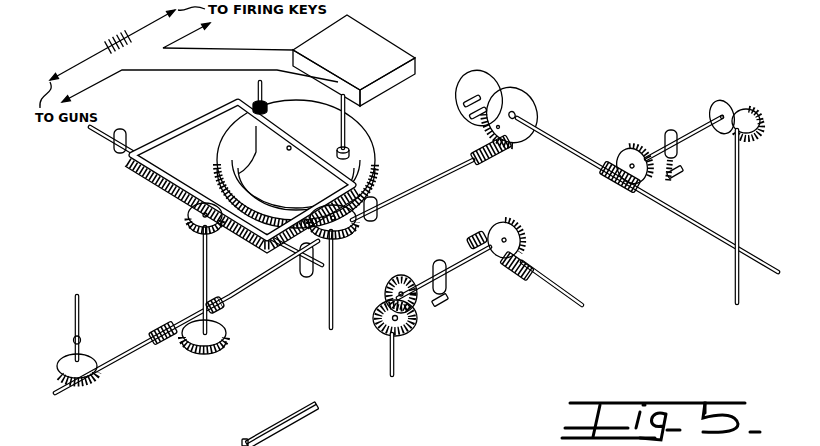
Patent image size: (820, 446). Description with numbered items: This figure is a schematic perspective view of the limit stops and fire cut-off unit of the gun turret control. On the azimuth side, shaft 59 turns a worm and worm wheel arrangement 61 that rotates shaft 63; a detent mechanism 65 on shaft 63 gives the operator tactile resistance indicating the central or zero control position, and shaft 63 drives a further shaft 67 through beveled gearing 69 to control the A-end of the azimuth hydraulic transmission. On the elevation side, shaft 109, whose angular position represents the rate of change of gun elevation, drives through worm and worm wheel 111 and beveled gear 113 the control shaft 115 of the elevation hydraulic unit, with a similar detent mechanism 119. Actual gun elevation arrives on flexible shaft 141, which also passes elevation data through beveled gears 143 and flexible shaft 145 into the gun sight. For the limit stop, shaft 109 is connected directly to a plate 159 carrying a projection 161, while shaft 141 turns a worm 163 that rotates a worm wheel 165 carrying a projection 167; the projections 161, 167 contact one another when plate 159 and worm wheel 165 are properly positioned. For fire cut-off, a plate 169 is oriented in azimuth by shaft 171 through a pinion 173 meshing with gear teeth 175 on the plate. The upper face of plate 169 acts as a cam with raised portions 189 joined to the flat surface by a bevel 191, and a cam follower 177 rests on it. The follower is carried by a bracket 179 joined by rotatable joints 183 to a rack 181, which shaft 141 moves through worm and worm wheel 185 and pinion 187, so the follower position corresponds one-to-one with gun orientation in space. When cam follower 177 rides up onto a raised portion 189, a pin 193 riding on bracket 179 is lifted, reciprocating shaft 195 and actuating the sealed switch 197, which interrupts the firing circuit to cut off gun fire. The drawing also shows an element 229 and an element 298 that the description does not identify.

The shaft 59 is at (560, 287).
The worm and worm wheel arrangement 61 is at (522, 256).
The shaft 63 is at (424, 276).
The detent mechanism 65 is at (449, 290).
The shaft 67 is at (395, 347).
The beveled gearing 69 is at (388, 303).
The shaft 109 is at (748, 256).
The worm and worm wheel 111 is at (648, 196).
The beveled gear 113 is at (731, 108).
The control shaft 115 is at (740, 192).
The detent mechanism 119 is at (676, 180).
The flexible shaft 141 is at (60, 398).
The beveled gears 143 is at (96, 392).
The flexible shaft 145 is at (81, 302).
The plate 159 is at (500, 80).
The projection 161 is at (466, 108).
The worm 163 is at (494, 162).
The worm wheel 165 is at (534, 104).
The projection 167 is at (474, 126).
The plate 169 is at (368, 144).
The shaft 171 is at (336, 264).
The pinion 173 is at (380, 205).
The gear teeth 175 is at (366, 184).
The cam follower 177 is at (257, 138).
The bracket 179 is at (243, 92).
The rack 181 is at (178, 186).
The rotatable joints 183 is at (121, 155).
The worm and worm wheel 185 is at (177, 346).
The pinion 187 is at (189, 228).
The raised portions 189 is at (237, 142).
The bevel 191 is at (236, 157).
The pin 193 is at (352, 151).
The shaft 195 is at (350, 112).
The sealed switch 197 is at (403, 51).
The bar 229 is at (290, 427).
The pin 298 is at (240, 443).